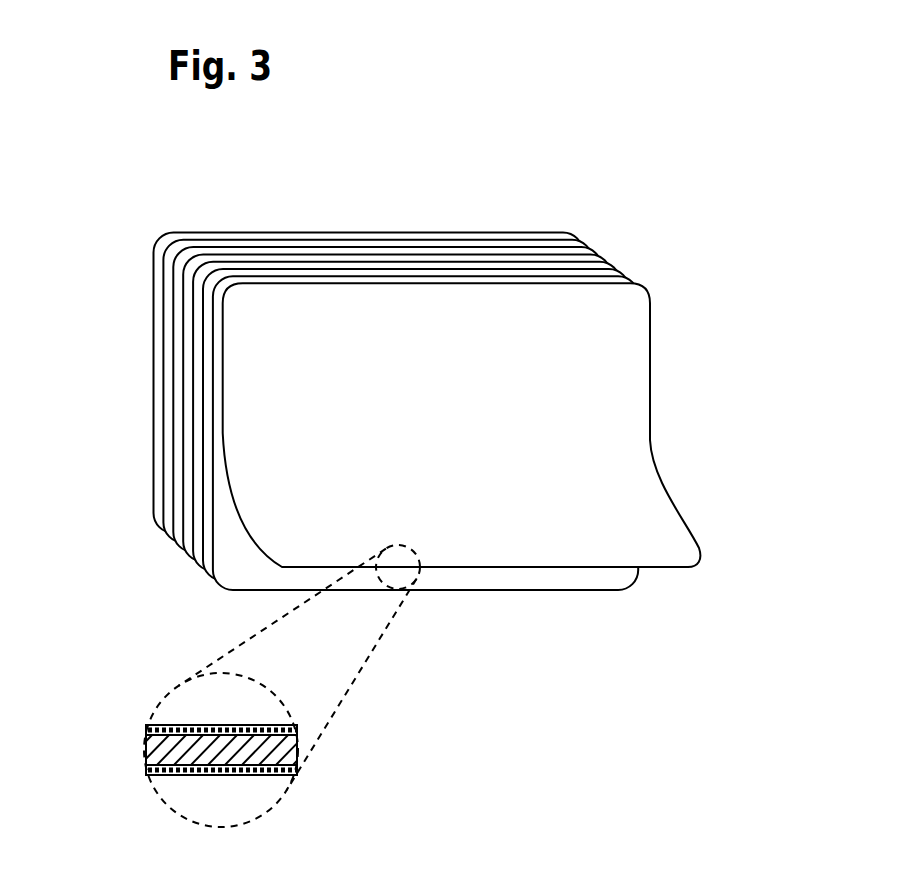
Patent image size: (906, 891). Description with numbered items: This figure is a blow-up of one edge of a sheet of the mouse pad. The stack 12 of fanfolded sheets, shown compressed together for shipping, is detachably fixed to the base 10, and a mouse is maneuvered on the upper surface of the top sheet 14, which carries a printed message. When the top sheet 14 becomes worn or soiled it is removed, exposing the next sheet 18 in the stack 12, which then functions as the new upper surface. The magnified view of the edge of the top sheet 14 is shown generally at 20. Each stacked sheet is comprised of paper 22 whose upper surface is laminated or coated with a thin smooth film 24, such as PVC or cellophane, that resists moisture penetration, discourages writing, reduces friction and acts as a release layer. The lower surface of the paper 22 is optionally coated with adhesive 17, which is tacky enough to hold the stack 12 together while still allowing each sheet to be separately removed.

The base 10 is at (154, 277).
The stack 12 is at (385, 260).
The top sheet 14 is at (695, 533).
The next sheet 18 is at (528, 577).
The magnified view of the edge of top sheet 20 is at (122, 714).
The paper 22 is at (270, 752).
The film 24 is at (217, 725).
The adhesive 17 is at (193, 767).